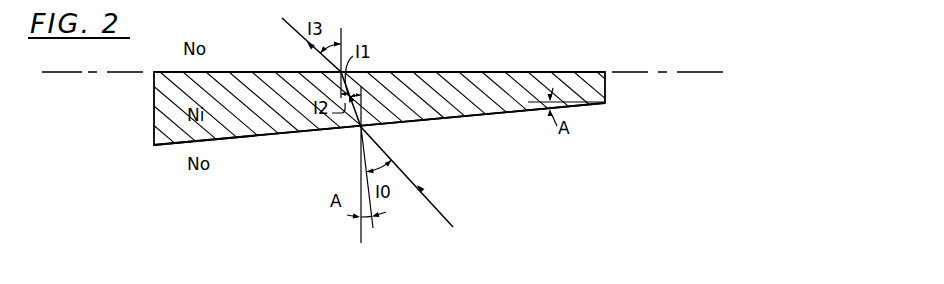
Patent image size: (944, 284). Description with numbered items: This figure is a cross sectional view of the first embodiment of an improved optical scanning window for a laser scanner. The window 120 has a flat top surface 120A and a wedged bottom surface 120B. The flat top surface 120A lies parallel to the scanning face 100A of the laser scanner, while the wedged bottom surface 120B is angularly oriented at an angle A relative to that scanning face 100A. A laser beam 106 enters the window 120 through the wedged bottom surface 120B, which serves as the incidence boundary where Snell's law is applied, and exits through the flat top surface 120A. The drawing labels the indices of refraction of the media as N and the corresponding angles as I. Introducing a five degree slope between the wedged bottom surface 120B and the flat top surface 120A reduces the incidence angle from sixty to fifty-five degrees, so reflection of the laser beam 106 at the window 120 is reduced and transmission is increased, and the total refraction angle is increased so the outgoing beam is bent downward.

The scanning face 100A is at (620, 72).
The laser beam 106 is at (284, 22).
The window 120 is at (467, 85).
The flat top surface 120A is at (405, 72).
The wedged bottom surface 120B is at (479, 115).